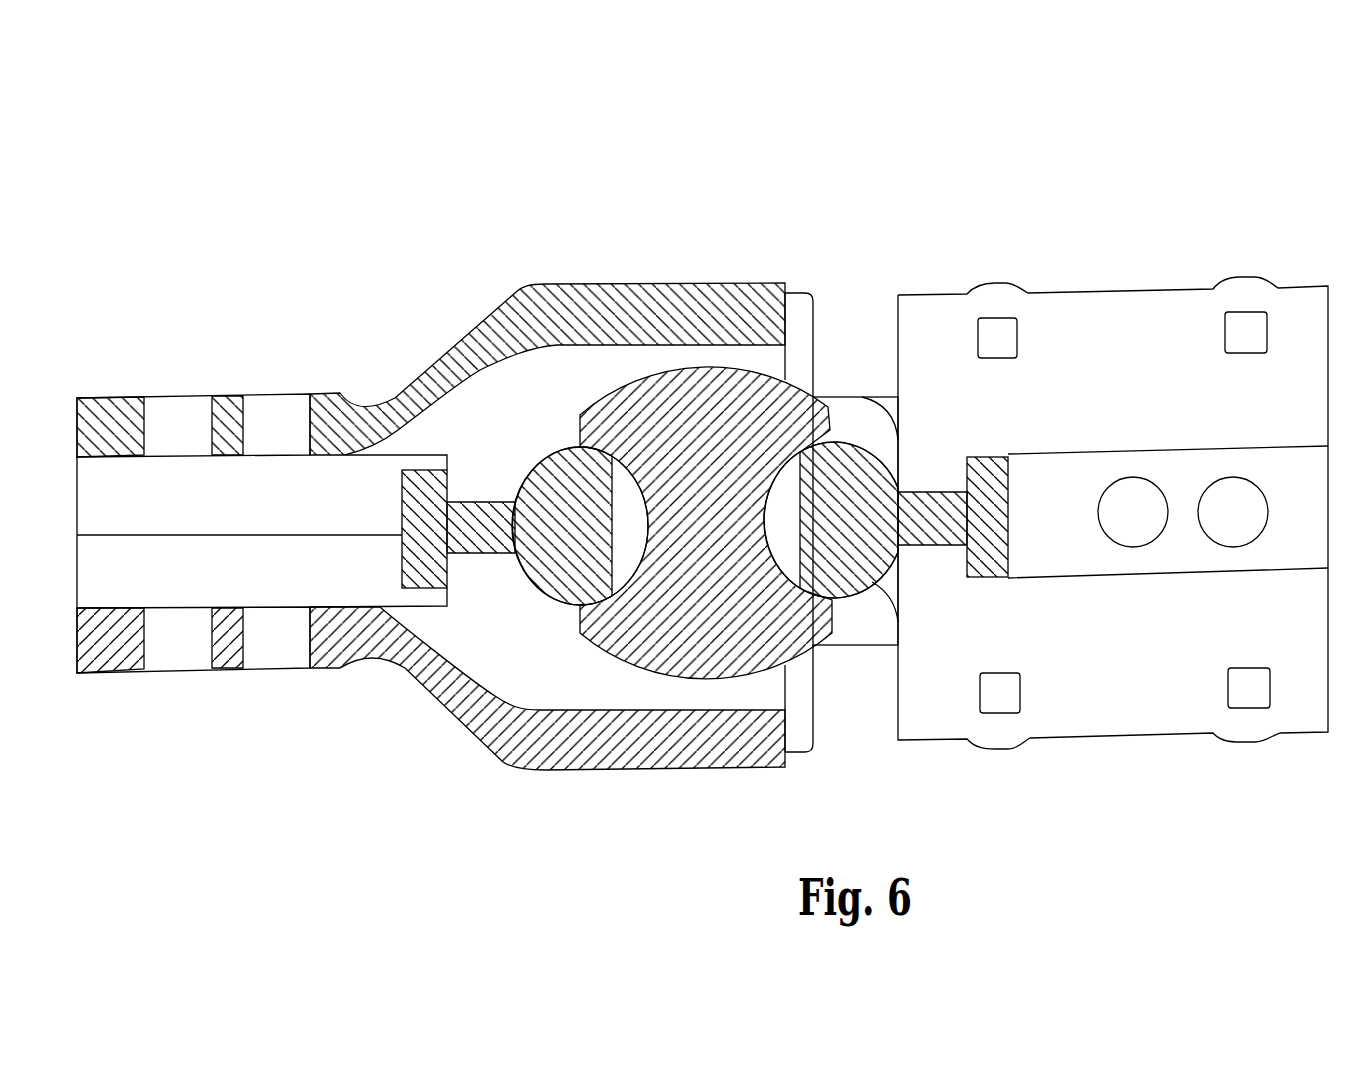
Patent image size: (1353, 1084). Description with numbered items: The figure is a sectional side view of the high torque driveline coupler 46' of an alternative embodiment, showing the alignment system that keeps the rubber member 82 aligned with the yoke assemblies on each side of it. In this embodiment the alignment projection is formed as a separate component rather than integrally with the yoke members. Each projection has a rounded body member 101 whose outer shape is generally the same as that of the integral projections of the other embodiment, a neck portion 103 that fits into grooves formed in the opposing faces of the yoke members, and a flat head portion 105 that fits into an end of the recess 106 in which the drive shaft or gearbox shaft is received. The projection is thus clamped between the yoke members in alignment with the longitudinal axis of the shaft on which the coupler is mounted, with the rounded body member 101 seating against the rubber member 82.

The high torque driveline coupler 46' is at (487, 409).
The rubber member 82 is at (700, 392).
The rounded body member 101 is at (561, 480).
The neck portion 103 is at (485, 520).
The flat head portion 105 is at (431, 486).
The recess 106 is at (1025, 468).